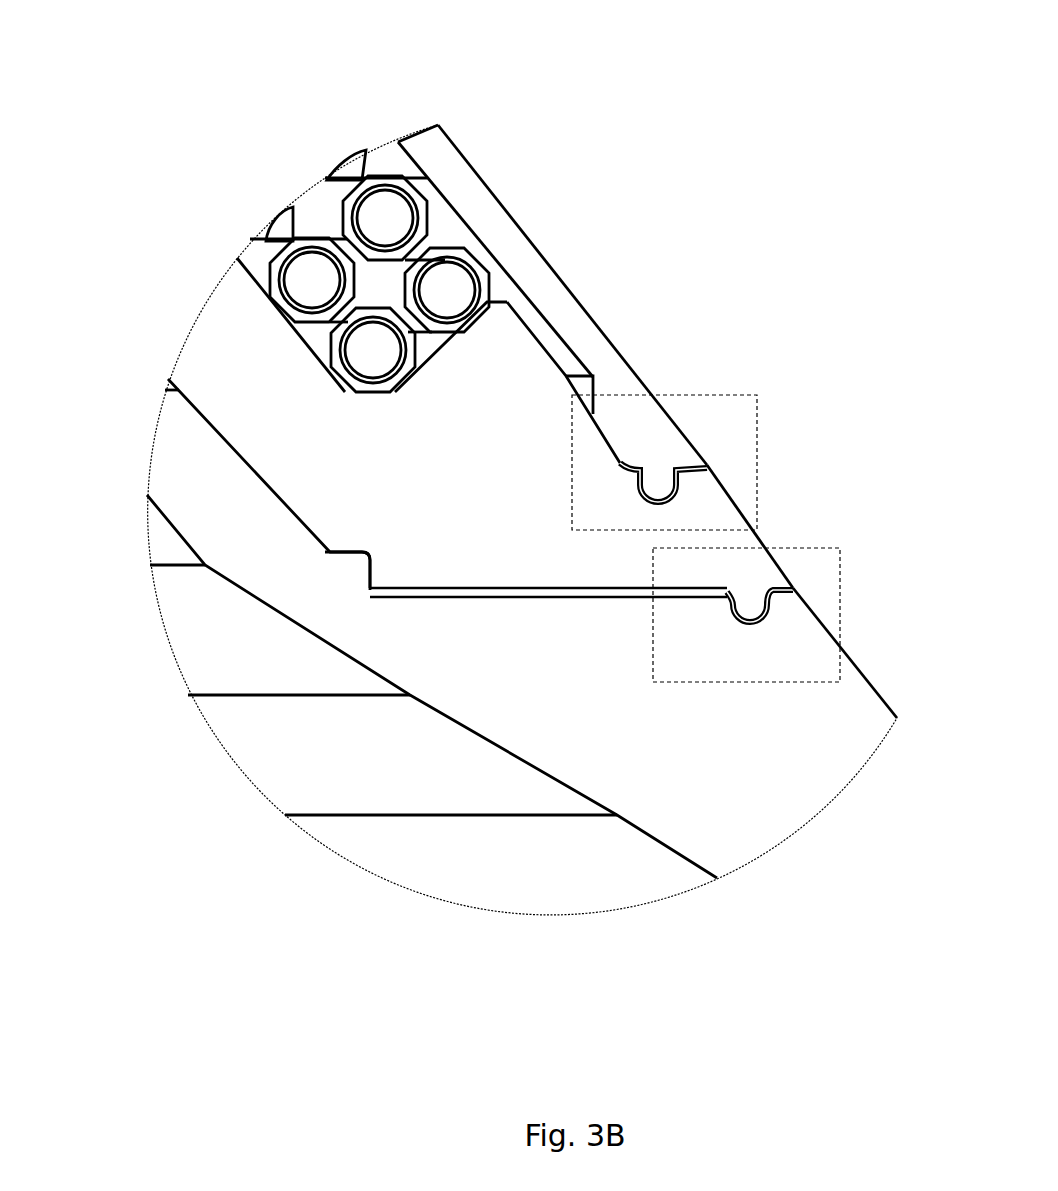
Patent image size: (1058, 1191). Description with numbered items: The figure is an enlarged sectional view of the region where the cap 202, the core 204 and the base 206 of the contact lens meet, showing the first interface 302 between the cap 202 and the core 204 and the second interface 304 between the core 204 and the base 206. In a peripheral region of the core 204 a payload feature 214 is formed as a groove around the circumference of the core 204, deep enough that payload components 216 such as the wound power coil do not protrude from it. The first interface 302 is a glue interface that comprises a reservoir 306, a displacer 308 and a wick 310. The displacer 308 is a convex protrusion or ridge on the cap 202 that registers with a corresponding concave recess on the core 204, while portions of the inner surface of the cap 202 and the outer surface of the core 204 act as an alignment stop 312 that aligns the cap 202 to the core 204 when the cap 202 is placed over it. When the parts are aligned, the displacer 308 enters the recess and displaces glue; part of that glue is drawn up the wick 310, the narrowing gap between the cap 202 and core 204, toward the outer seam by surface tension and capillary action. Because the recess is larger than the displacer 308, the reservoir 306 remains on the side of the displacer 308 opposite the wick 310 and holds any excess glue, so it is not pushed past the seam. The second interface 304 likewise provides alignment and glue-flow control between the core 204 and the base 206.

The payload component 216 is at (328, 218).
The payload feature 214 is at (257, 293).
The cap 202 is at (518, 242).
The core 204 is at (508, 343).
The first interface 302 is at (683, 395).
The displacer 308 is at (658, 480).
The wick 310 is at (773, 588).
The second interface 304 is at (842, 548).
The alignment stop 312 is at (603, 432).
The reservoir 306 is at (641, 481).
The base 206 is at (715, 777).